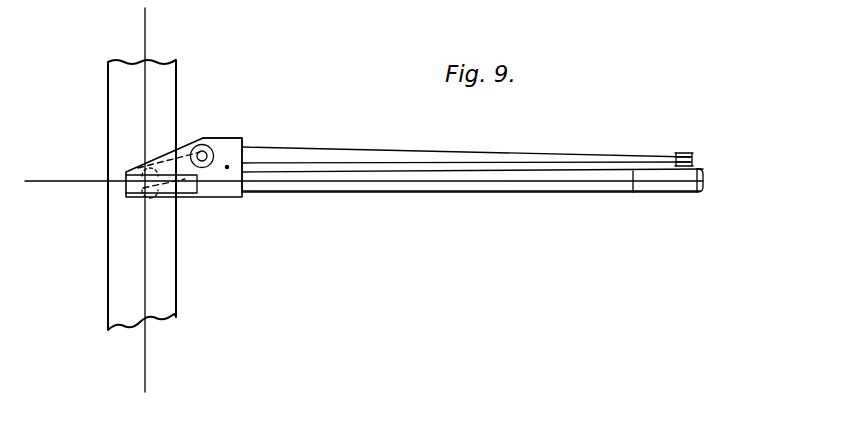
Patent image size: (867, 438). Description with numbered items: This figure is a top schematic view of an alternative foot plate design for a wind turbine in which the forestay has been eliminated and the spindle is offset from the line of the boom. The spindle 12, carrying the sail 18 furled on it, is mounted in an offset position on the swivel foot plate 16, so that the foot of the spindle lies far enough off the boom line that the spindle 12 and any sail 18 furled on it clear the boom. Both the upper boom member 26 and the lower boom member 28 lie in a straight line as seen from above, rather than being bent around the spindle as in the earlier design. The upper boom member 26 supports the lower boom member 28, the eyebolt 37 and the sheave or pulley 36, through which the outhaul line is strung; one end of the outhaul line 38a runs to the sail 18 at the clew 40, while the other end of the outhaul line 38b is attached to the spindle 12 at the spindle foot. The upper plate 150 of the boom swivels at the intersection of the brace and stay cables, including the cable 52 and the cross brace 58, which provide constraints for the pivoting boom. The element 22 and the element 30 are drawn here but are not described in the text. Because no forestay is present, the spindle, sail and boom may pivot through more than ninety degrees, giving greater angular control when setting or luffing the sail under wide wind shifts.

The spindle 12 is at (206, 163).
The foot plate 16 is at (187, 137).
The sail 18 is at (208, 141).
The post 22 is at (176, 286).
The upper boom member 26 is at (553, 187).
The lower boom member 28 is at (635, 175).
The arm end 30 is at (717, 176).
The pulley 36 is at (685, 152).
The eyebolt 37 is at (697, 192).
The outhaul line end 38a is at (422, 152).
The outhaul line end 38b is at (500, 163).
The clew 40 is at (230, 138).
The brace cable 52 is at (48, 181).
The cross brace 58 is at (178, 378).
The upper plate 150 is at (183, 195).